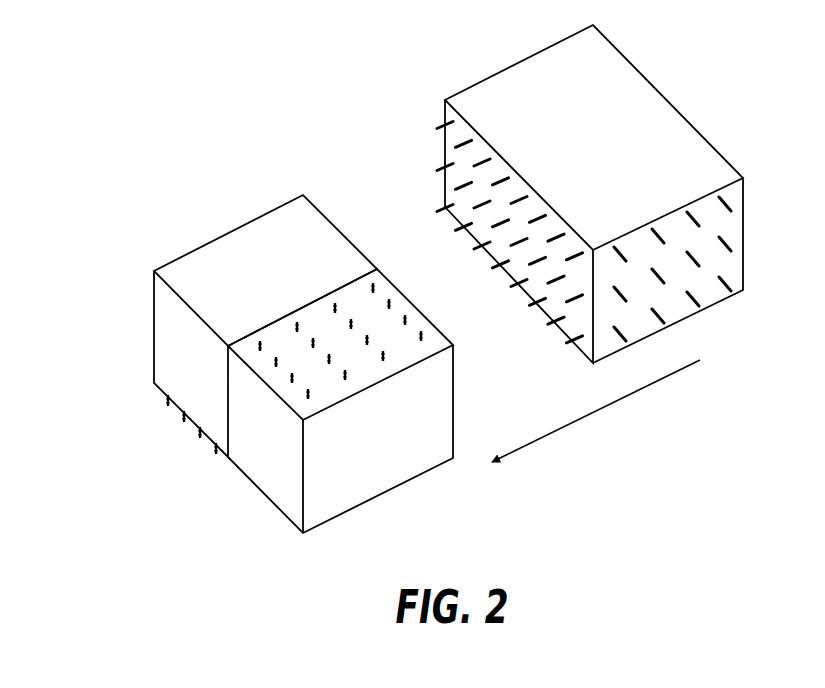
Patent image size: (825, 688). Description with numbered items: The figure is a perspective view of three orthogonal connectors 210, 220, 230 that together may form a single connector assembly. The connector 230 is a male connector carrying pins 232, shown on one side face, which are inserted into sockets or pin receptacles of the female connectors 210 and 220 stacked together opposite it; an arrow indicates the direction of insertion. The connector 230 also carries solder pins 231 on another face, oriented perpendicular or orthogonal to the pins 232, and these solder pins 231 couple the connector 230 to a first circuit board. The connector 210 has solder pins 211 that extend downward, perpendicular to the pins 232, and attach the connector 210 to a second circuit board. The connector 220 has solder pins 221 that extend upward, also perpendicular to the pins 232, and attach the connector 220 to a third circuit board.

The connector 210 is at (185, 226).
The solder pins 211 is at (167, 403).
The connector 220 is at (413, 506).
The solder pins 221 is at (424, 338).
The connector 230 is at (485, 56).
The solder pins 231 is at (727, 240).
The pins 232 is at (443, 167).